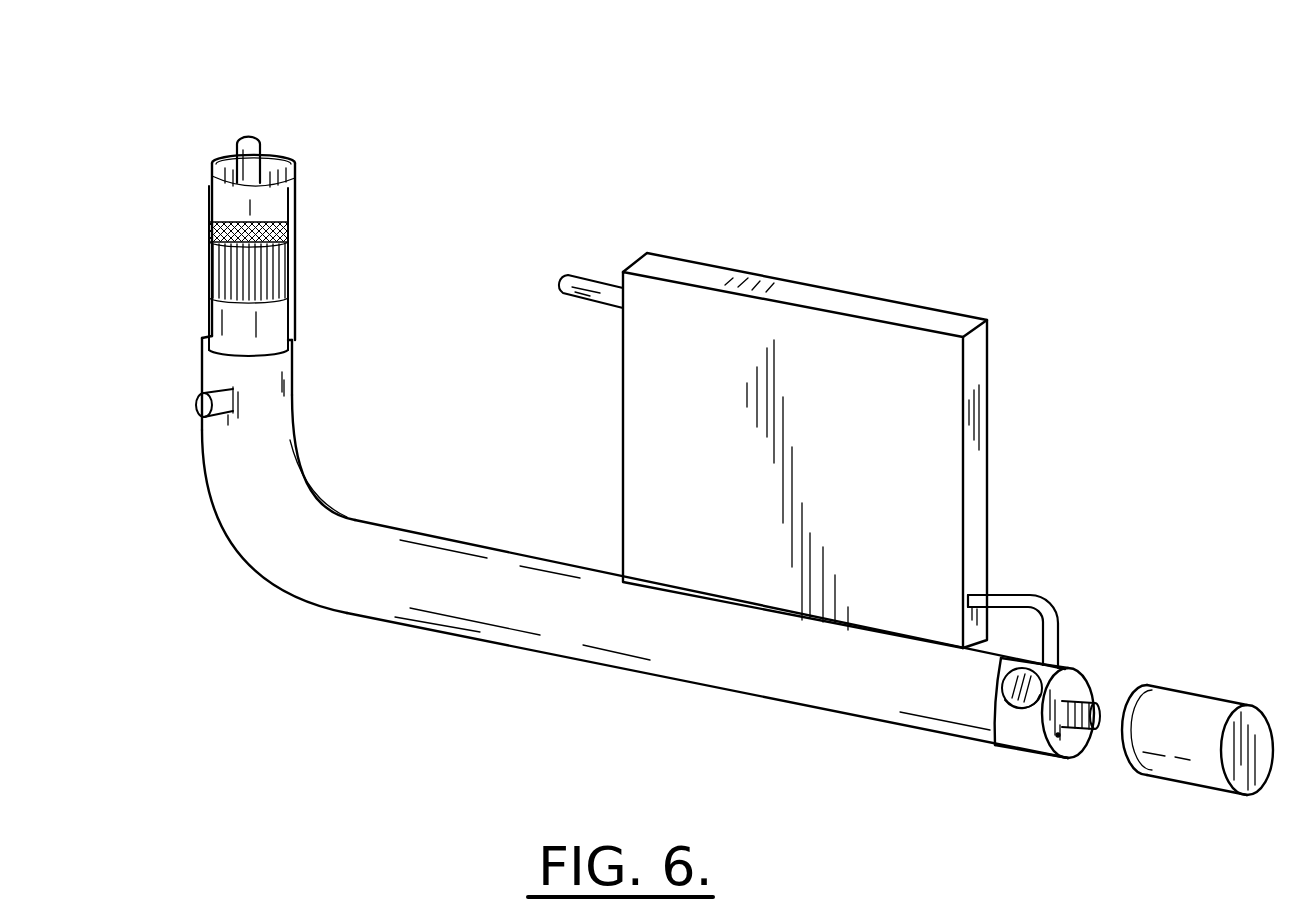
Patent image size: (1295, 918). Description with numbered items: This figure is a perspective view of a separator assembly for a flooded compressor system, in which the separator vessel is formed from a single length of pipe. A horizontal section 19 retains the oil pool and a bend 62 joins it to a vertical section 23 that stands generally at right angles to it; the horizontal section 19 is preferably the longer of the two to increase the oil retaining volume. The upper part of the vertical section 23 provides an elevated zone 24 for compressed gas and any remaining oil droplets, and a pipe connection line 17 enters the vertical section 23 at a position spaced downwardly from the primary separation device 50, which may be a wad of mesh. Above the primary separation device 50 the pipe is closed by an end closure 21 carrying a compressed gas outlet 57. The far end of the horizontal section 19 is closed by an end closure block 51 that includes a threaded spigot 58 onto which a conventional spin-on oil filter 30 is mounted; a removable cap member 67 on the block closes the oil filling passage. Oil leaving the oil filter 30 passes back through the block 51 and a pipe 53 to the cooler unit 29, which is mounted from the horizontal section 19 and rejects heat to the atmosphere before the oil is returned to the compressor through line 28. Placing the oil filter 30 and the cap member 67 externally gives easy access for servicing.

The pipe connection line 17 is at (205, 418).
The horizontal section 19 is at (527, 615).
The end closure 21 is at (290, 160).
The vertical section 23 is at (262, 402).
The elevated zone 24 is at (243, 327).
The line 28 is at (596, 275).
The cooler unit 29 is at (838, 290).
The oil filter 30 is at (1198, 718).
The primary separation device 50 is at (250, 272).
The end closure block 51 is at (1028, 723).
The pipe 53 is at (1033, 627).
The compressed gas outlet 57 is at (262, 140).
The threaded spigot 58 is at (1093, 708).
The bend 62 is at (272, 522).
The removable cap member 67 is at (1003, 698).